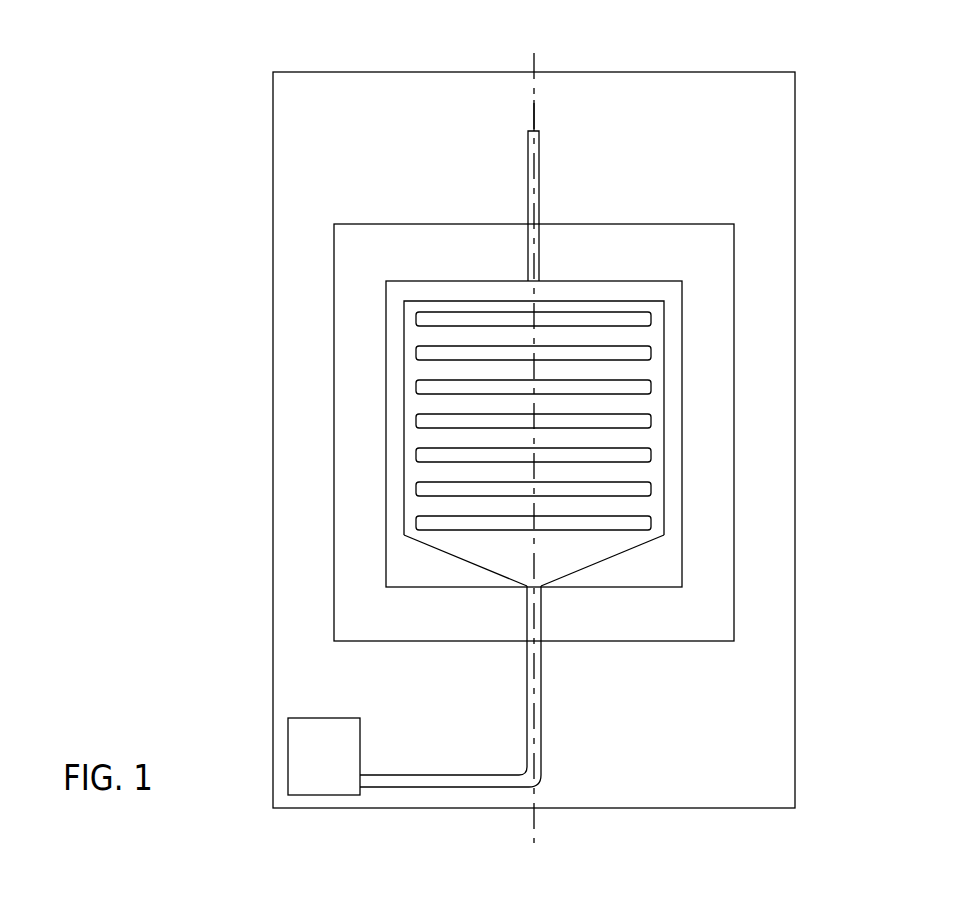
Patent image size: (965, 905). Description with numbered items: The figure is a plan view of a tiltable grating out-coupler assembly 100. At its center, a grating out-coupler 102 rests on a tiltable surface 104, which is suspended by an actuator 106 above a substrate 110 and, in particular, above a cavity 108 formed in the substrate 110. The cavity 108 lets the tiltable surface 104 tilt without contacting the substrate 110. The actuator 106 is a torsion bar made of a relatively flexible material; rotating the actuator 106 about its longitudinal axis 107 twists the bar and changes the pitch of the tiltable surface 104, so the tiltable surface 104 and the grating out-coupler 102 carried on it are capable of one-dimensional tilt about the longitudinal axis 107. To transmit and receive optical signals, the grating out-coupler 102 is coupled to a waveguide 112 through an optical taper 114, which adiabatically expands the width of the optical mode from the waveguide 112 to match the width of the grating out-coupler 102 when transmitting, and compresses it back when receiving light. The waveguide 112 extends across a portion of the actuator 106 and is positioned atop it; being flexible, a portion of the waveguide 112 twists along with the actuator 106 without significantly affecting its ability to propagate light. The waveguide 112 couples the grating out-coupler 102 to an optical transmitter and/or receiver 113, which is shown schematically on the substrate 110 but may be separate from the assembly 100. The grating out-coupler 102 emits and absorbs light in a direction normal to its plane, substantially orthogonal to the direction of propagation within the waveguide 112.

The tiltable grating out-coupler assembly 100 is at (858, 88).
The grating out-coupler 102 is at (647, 307).
The tiltable surface 104 is at (675, 357).
The actuator 106 is at (540, 185).
The longitudinal axis 107 is at (535, 115).
The cavity 108 is at (447, 242).
The substrate 110 is at (370, 90).
The waveguide 112 is at (543, 702).
The optical transmitter and/or receiver 113 is at (340, 761).
The optical taper 114 is at (487, 553).